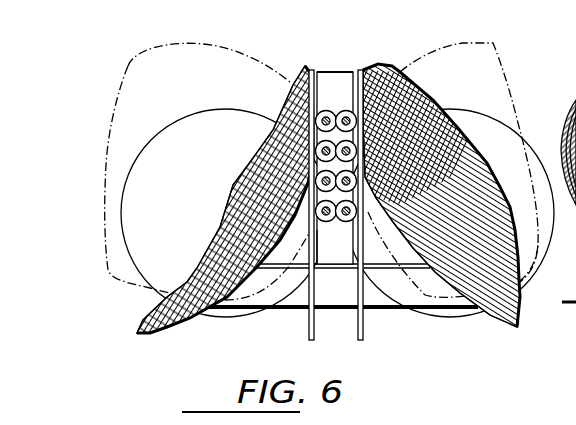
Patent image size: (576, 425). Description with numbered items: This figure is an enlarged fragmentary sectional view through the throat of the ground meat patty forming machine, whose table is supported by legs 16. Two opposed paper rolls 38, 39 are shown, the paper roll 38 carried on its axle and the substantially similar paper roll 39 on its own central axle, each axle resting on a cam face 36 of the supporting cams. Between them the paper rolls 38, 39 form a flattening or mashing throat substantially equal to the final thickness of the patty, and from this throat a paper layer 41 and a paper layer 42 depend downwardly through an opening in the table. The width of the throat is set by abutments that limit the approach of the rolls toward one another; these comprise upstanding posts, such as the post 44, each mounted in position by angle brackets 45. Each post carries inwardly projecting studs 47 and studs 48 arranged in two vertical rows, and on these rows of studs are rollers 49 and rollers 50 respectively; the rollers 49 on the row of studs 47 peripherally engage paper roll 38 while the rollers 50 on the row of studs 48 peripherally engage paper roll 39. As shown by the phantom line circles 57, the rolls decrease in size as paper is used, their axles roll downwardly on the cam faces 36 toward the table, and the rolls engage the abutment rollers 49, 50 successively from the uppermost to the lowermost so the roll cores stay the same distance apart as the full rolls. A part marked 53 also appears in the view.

The legs 16 is at (175, 8).
The cam face 36 is at (566, 119).
The paper roll 38 is at (305, 70).
The paper roll 39 is at (380, 72).
The paper layer 41 is at (309, 326).
The paper layer 42 is at (363, 327).
The post 44 is at (346, 71).
The angle bracket 45 is at (234, 298).
The studs 47 is at (330, 72).
The studs 48 is at (340, 112).
The rollers 49 is at (350, 225).
The rollers 50 is at (343, 250).
The support 53 is at (569, 73).
The phantom line circles 57 is at (196, 46).